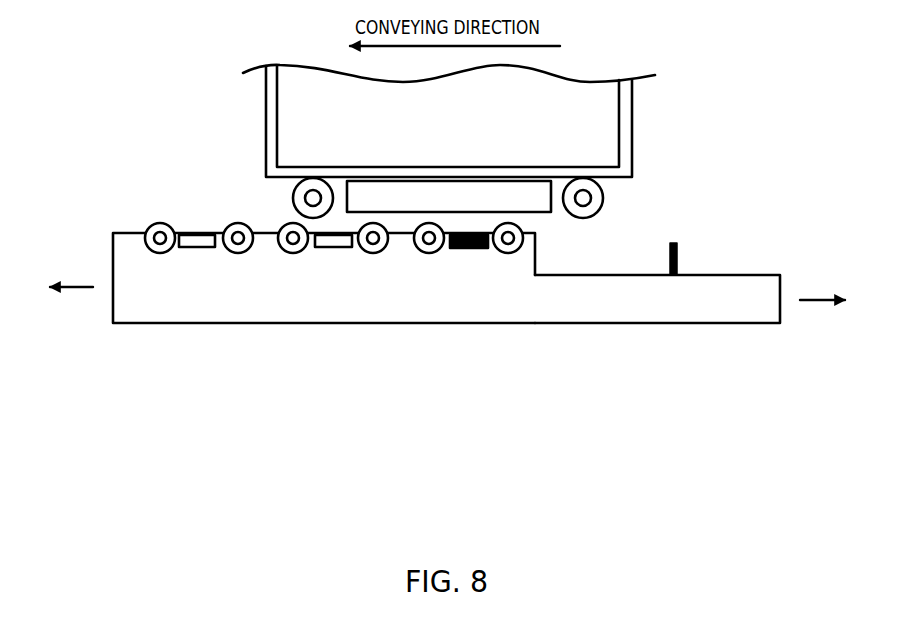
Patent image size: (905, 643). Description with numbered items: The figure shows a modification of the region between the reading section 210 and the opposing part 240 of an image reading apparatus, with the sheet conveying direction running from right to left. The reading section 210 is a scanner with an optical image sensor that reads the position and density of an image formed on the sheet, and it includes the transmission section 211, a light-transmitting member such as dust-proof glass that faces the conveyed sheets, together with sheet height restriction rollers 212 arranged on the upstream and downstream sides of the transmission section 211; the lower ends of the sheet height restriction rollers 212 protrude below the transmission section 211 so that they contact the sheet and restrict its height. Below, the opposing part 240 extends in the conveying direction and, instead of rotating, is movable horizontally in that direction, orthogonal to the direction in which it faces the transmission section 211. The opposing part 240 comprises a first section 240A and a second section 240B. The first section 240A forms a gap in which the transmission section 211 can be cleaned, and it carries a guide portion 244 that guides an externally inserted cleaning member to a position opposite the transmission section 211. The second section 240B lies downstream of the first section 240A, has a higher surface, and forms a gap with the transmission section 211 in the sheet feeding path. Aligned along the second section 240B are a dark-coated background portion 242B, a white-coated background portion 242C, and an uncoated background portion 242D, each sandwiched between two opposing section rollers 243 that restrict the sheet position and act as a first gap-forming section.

The reading section 210 is at (634, 121).
The transmission section 211 is at (503, 188).
The sheet height restriction roller 212 is at (600, 190).
The opposing part 240 is at (446, 342).
The first section 240A is at (632, 303).
The second section 240B is at (217, 297).
The background portion 242B is at (470, 250).
The background portion 242C is at (333, 247).
The background portion 242D is at (192, 247).
The opposing section roller 243 is at (293, 224).
The guide portion 244 is at (678, 255).